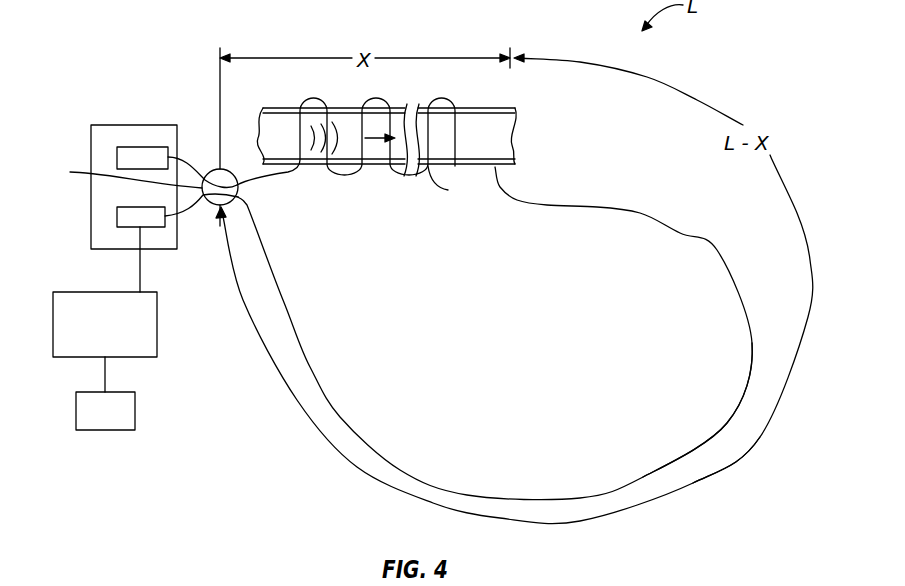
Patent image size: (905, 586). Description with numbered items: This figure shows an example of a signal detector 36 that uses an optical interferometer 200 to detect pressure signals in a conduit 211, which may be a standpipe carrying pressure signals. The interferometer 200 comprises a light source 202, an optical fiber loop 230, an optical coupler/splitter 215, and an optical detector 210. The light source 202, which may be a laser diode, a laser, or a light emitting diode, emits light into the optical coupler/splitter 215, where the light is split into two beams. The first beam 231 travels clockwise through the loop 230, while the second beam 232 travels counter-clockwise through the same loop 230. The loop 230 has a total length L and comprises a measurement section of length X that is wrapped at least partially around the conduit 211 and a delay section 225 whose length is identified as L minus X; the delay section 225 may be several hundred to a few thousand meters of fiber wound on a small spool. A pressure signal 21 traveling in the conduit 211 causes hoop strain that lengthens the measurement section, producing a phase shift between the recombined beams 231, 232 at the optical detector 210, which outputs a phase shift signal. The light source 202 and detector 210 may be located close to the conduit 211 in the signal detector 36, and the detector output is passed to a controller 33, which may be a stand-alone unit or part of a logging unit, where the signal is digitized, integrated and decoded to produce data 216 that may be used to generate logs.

The signal detector 36 is at (106, 125).
The light source 202 is at (117, 159).
The optical coupler/splitter 215 is at (116, 174).
The optical detector 210 is at (117, 216).
The controller 33 is at (82, 292).
The data 216 is at (90, 431).
The optical interferometer 200 is at (318, 98).
The optical fiber loop 230 is at (461, 92).
The conduit 211 is at (460, 185).
The pressure signal 21 is at (338, 143).
The beam (counter-clockwise) 232 is at (258, 190).
The beam (clockwise) 231 is at (272, 212).
The delay section 225 is at (727, 423).